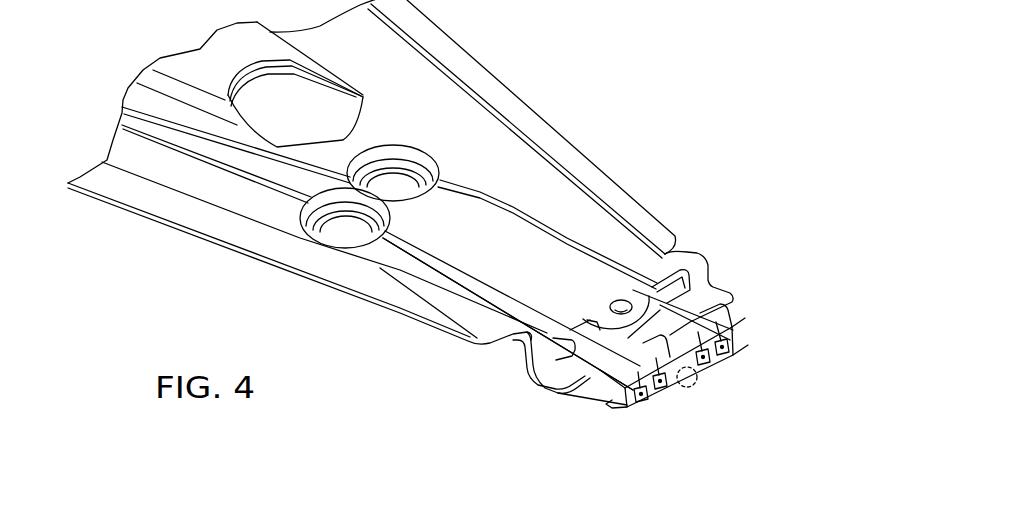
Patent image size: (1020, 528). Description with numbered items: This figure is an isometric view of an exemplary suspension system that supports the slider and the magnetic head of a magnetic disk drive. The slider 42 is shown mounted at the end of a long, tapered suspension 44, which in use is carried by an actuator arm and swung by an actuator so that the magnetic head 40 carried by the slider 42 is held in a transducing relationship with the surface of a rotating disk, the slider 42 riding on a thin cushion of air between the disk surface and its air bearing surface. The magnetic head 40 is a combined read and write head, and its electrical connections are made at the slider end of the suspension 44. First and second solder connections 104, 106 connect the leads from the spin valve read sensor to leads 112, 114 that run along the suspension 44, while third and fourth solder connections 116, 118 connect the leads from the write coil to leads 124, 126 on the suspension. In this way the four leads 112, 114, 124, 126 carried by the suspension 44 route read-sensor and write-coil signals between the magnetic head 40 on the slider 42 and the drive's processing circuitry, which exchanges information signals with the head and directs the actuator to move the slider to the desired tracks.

The magnetic head 40 is at (697, 389).
The slider 42 is at (578, 403).
The suspension 44 is at (540, 110).
The first solder connection 104 is at (631, 405).
The second solder connection 106 is at (722, 345).
The lead 112 is at (412, 247).
The lead 114 is at (592, 243).
The third solder connection 116 is at (659, 392).
The fourth solder connection 118 is at (706, 364).
The lead 124 is at (460, 275).
The lead 126 is at (513, 207).